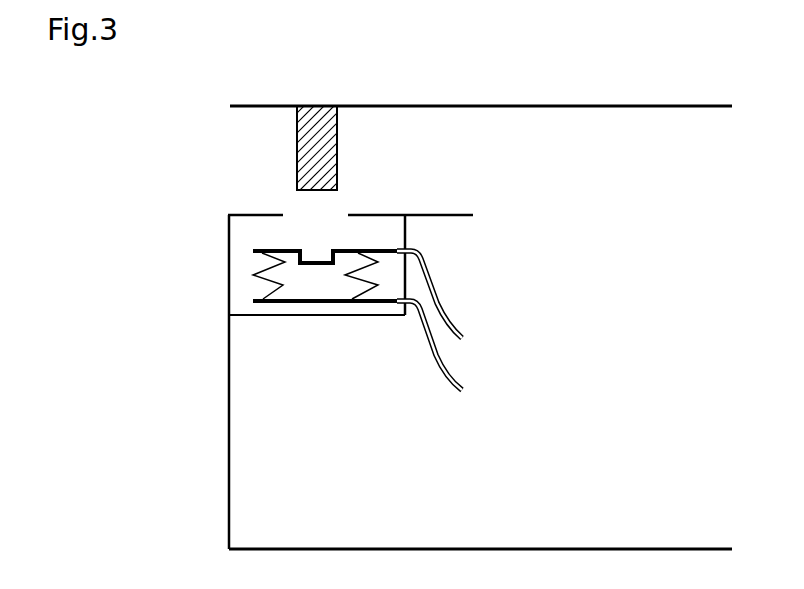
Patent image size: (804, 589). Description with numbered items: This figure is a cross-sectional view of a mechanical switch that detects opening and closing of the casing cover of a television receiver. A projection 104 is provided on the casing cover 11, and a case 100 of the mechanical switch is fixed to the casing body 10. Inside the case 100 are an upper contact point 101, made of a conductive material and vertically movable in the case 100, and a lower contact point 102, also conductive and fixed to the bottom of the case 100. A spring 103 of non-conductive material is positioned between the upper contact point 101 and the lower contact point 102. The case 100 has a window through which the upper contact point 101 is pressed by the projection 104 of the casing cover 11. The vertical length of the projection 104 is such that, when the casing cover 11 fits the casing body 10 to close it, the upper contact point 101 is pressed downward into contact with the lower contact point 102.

The casing body 10 is at (338, 549).
The casing cover 11 is at (500, 105).
The case 100 is at (385, 316).
The upper contact point 101 is at (421, 251).
The lower contact point 102 is at (414, 294).
The spring 103 is at (352, 279).
The projection 104 is at (337, 148).